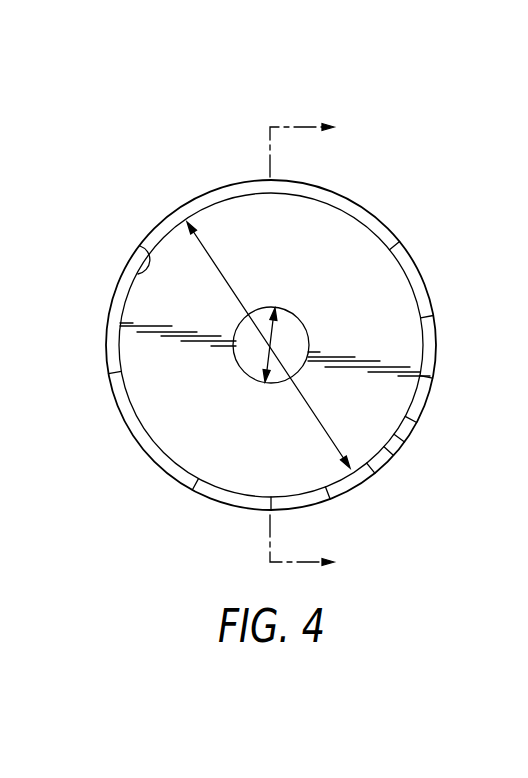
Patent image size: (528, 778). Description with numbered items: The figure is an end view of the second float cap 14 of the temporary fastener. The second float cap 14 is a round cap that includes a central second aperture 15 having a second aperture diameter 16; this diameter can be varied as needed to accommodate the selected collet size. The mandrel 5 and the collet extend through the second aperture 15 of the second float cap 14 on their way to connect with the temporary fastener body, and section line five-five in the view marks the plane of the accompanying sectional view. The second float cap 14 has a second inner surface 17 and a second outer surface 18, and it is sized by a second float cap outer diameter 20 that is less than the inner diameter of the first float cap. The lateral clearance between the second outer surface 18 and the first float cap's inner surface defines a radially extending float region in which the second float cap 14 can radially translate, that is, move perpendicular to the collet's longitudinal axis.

The second float cap 14 is at (127, 170).
The second aperture 15 is at (243, 366).
The second aperture diameter 16 is at (274, 336).
The second inner surface 17 is at (126, 268).
The second outer surface 18 is at (377, 218).
The second float cap outer diameter 20 is at (335, 438).
The mandrel 5 is at (311, 351).